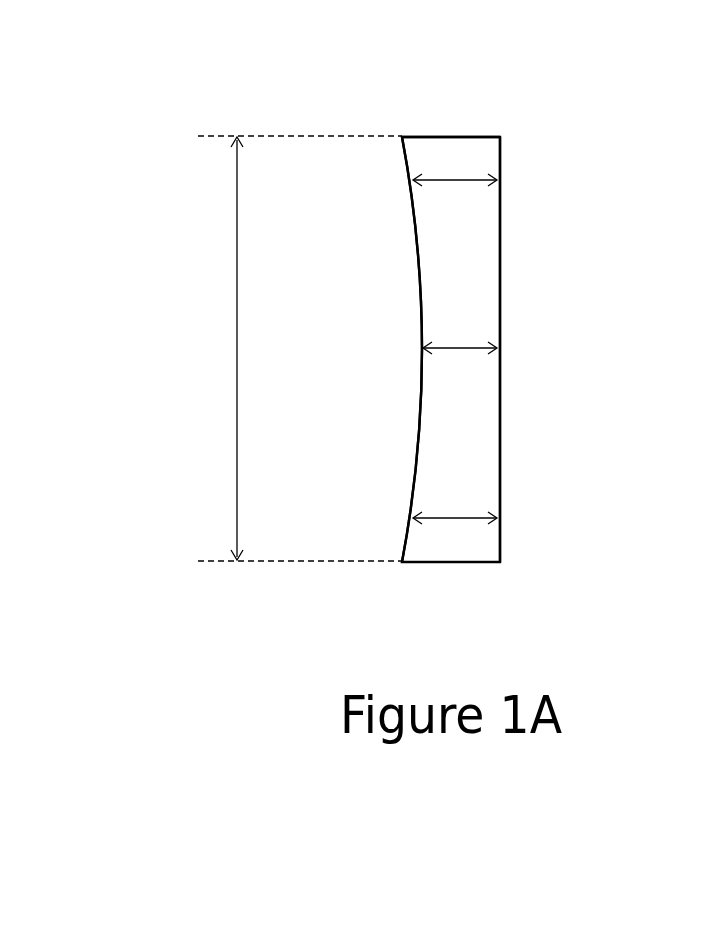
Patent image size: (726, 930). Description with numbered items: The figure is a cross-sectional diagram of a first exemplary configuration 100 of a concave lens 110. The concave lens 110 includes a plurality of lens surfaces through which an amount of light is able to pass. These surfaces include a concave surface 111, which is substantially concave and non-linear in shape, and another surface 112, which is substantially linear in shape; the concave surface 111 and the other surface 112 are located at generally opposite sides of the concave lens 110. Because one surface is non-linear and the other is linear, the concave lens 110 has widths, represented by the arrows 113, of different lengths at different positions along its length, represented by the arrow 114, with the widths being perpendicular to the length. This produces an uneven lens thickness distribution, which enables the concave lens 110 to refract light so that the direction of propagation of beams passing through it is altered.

The first exemplary configuration 100 is at (557, 487).
The concave lens 110 is at (439, 137).
The concave surface 111 is at (416, 472).
The another surface 112 is at (500, 216).
The arrows representing widths 113 is at (448, 181).
The arrow representing length 114 is at (237, 298).